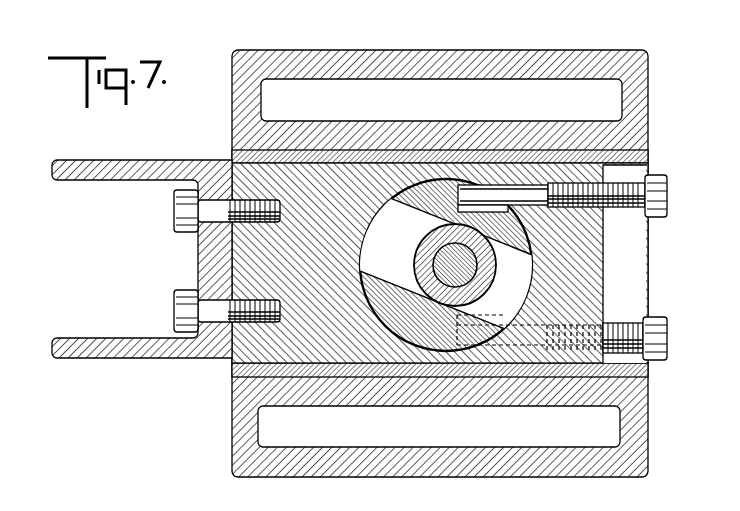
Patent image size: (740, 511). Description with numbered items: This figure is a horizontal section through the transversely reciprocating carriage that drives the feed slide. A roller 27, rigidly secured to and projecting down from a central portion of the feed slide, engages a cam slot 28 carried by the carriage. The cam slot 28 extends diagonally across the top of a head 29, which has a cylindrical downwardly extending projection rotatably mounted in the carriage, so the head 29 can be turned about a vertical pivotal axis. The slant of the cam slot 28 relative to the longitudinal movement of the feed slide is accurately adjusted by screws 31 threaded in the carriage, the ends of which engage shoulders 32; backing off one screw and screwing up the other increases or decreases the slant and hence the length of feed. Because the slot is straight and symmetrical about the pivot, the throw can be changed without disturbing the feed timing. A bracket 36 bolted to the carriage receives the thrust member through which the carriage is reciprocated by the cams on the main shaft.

The roller 27 is at (421, 250).
The cam slot 28 is at (502, 300).
The head 29 is at (410, 328).
The screws 31 is at (620, 218).
The shoulders 32 is at (433, 213).
The bracket 36 is at (113, 181).